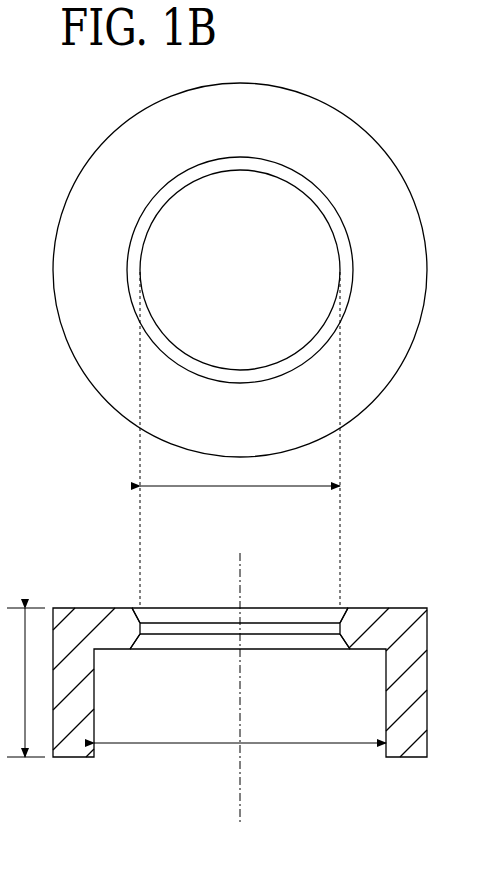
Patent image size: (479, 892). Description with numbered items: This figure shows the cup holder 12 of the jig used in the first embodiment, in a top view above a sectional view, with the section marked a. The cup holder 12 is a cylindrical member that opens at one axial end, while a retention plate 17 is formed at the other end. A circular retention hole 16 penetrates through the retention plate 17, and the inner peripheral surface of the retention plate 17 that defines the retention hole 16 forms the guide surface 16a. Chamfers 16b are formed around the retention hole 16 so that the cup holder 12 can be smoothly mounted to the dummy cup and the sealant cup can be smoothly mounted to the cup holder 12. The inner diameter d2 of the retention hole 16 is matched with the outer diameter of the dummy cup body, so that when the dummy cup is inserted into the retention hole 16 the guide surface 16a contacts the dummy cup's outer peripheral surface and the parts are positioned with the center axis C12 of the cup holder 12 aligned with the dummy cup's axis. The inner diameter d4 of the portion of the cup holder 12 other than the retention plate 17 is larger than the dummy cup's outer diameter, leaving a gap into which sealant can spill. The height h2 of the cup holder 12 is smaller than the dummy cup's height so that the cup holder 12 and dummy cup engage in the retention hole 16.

The cup holder 12 is at (373, 138).
The retention hole 16 is at (350, 262).
The guide surface 16a is at (145, 636).
The chamfers 16b is at (345, 226).
The retention plate 17 is at (83, 608).
The inner diameter of the retention hole d2 is at (240, 440).
The inner diameter of the cup holder d4 is at (240, 728).
The height of the cup holder h2 is at (26, 682).
The center axis C12 is at (238, 795).
The element a is at (8, 564).